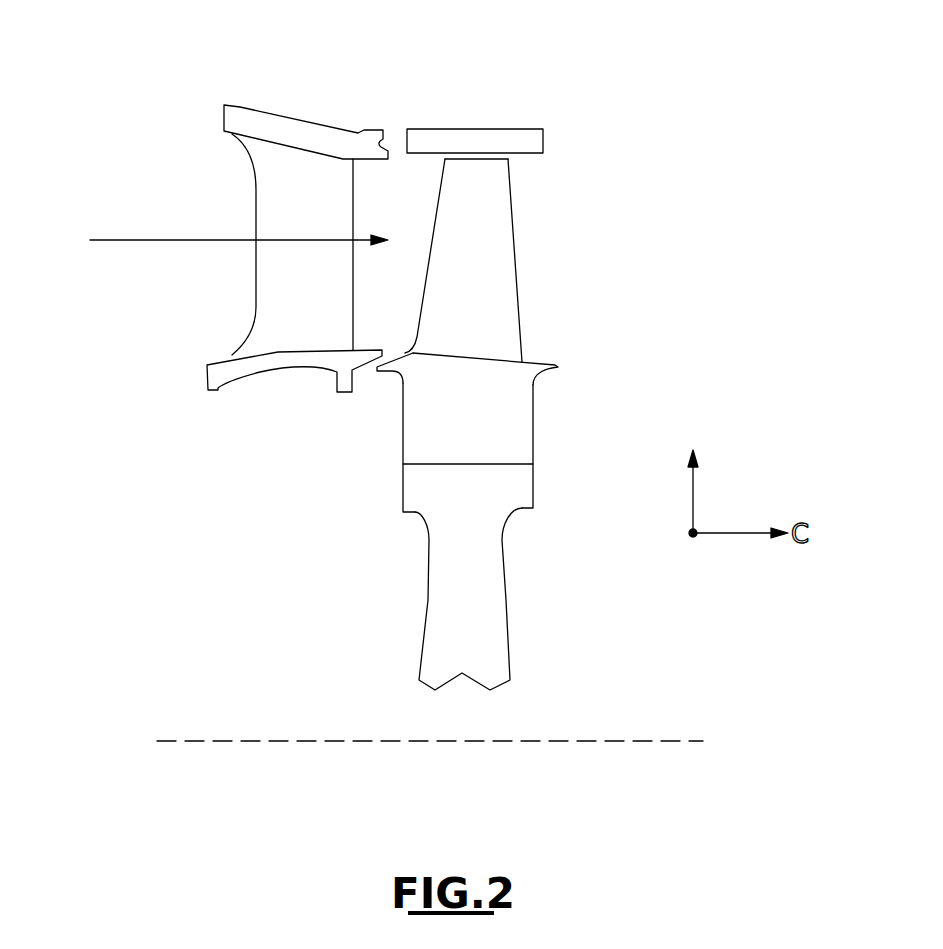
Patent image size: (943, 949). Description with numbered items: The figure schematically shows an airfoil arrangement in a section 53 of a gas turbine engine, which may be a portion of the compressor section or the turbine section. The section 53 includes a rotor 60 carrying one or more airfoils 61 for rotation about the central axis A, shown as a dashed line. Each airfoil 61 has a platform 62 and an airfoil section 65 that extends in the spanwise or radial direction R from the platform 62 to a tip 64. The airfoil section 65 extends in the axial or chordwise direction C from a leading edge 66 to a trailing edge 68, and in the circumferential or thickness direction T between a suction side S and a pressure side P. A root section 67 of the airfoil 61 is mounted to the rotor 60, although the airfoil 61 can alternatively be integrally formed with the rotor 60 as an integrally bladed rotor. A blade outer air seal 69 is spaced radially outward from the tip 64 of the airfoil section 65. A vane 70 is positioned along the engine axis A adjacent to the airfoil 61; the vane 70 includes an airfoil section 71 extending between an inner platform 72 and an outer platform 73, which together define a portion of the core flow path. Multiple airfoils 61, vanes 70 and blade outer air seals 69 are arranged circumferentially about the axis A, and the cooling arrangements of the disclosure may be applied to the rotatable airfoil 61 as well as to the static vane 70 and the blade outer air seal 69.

The section 53 is at (118, 54).
The rotor 60 is at (492, 506).
The airfoil 61 is at (566, 238).
The platform 62 is at (505, 355).
The tip 64 is at (456, 159).
The airfoil section 65 is at (476, 222).
The leading edge 66 is at (435, 210).
The root section 67 is at (533, 425).
The trailing edge 68 is at (513, 210).
The blade outer air seal 69 is at (523, 129).
The vane 70 is at (214, 180).
The airfoil section 71 is at (281, 285).
The inner platform 72 is at (208, 379).
The outer platform 73 is at (224, 120).
The pressure side P is at (435, 300).
The suction side S is at (520, 290).
The central axis A is at (613, 741).
The axial or chordwise direction C is at (113, 242).
The radial direction R is at (736, 478).
The circumferential or thickness direction T is at (688, 536).